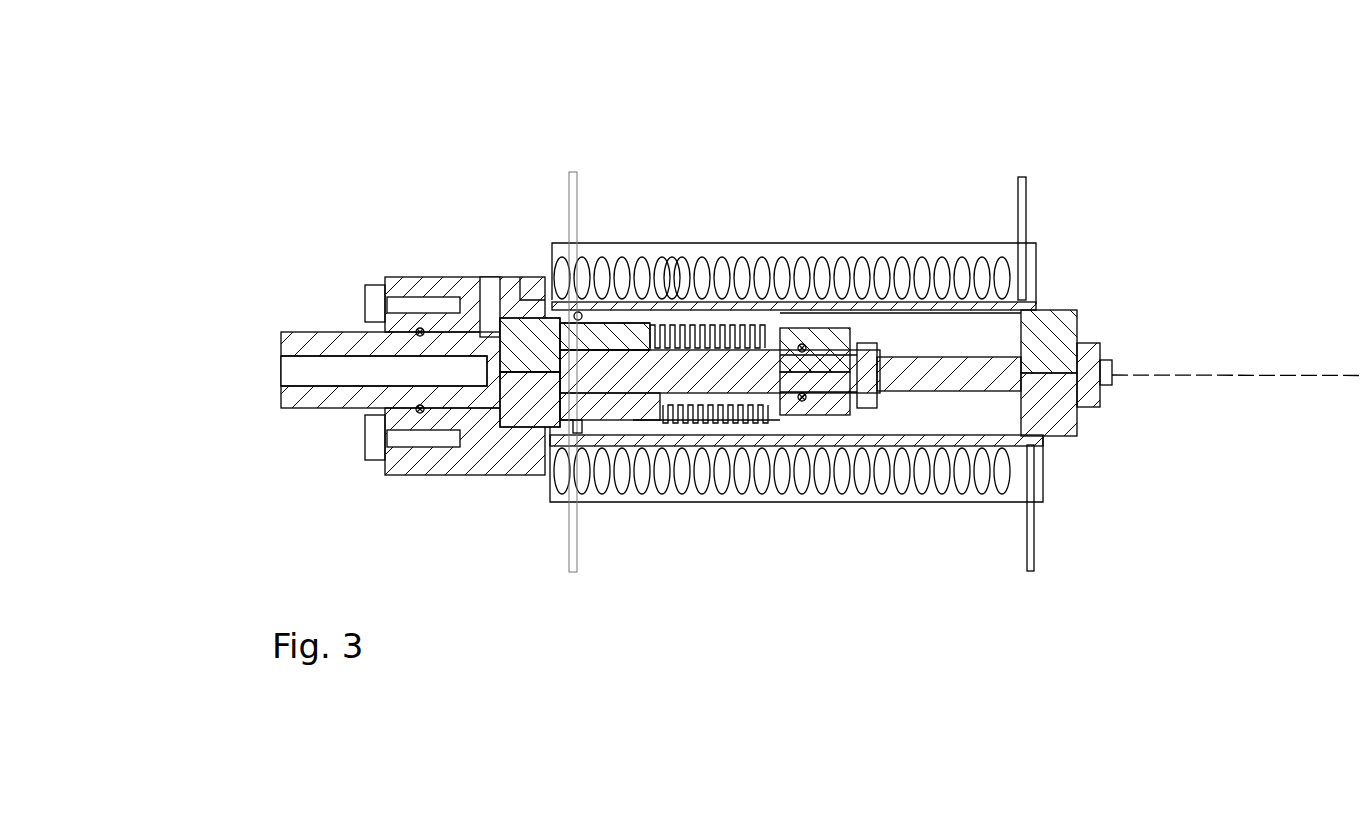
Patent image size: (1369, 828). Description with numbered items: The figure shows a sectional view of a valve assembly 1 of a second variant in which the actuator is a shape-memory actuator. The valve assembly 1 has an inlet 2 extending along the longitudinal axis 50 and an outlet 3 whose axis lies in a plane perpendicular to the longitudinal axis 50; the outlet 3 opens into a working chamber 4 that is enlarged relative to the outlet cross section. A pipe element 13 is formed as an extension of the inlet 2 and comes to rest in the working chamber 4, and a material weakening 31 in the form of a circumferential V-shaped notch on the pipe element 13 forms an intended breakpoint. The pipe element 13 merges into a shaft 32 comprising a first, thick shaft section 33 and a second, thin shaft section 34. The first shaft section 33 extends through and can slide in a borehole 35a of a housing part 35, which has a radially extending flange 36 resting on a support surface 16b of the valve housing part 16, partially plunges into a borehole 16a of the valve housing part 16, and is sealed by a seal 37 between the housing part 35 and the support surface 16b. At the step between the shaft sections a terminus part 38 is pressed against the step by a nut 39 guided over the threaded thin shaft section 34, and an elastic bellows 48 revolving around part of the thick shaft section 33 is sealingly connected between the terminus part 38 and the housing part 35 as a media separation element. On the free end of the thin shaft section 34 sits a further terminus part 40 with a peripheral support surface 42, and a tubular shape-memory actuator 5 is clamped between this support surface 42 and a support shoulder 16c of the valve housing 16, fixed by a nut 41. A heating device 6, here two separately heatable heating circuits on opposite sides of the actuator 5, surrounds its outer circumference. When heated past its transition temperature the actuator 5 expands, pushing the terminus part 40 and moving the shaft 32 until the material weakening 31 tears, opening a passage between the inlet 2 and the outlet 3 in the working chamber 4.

The valve assembly 1 is at (830, 126).
The inlet 2 is at (40, 372).
The outlet 3 is at (484, 290).
The working chamber 4 is at (460, 404).
The shape-memory actuator 5 is at (1030, 300).
The heating device 6 is at (1022, 180).
The pipe element 13 is at (447, 440).
The valve housing part 16 is at (505, 472).
The borehole 16a is at (545, 455).
The support surface 16b is at (578, 434).
The support shoulder 16c is at (537, 300).
The material weakening 31 is at (478, 350).
The shaft 32 is at (632, 380).
The first, thick shaft section 33 is at (750, 392).
The second, thin shaft section 34 is at (908, 392).
The housing part 35 is at (625, 302).
The borehole 35a is at (660, 305).
The flange 36 is at (597, 323).
The seal 37 is at (579, 310).
The terminus part 38 is at (835, 415).
The nut 39 is at (863, 345).
The terminus part 40 is at (1077, 328).
The nut 41 is at (1115, 385).
The support surface 42 is at (1030, 304).
The bellows 48 is at (692, 422).
The longitudinal axis 50 is at (152, 374).